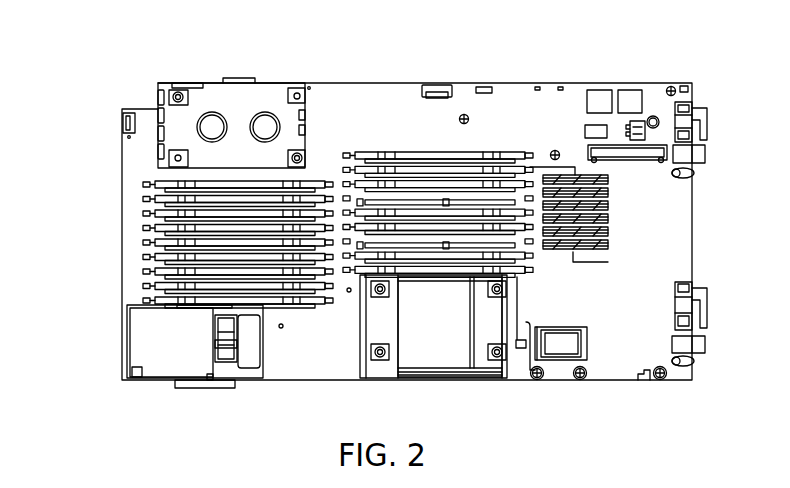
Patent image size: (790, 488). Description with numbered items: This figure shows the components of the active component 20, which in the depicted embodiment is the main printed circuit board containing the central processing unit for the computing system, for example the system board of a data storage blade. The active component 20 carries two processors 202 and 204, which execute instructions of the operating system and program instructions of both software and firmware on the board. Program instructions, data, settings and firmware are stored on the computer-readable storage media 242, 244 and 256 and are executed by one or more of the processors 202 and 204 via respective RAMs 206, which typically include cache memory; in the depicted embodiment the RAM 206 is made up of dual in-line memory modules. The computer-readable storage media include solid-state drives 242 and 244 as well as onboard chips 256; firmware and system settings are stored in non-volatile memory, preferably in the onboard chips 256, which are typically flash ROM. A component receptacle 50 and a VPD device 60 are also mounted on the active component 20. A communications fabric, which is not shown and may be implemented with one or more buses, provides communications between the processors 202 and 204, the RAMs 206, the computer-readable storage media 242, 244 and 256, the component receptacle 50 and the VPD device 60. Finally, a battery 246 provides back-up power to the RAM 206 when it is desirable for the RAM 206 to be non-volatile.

The active component 20 is at (357, 83).
The processor 202 is at (437, 348).
The processor 204 is at (236, 91).
The RAM 206 is at (141, 181).
The computer-readable storage media 242 is at (222, 326).
The computer-readable storage media 244 is at (222, 344).
The battery 246 is at (433, 85).
The component receptacle 50 is at (588, 148).
The VPD device 60 is at (585, 130).
The onboard chips 256 is at (630, 93).